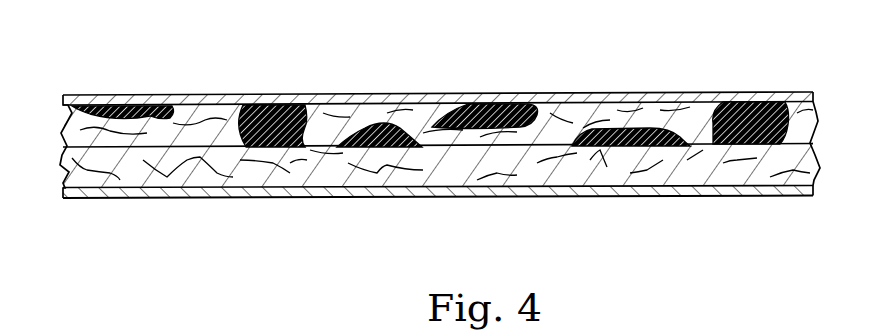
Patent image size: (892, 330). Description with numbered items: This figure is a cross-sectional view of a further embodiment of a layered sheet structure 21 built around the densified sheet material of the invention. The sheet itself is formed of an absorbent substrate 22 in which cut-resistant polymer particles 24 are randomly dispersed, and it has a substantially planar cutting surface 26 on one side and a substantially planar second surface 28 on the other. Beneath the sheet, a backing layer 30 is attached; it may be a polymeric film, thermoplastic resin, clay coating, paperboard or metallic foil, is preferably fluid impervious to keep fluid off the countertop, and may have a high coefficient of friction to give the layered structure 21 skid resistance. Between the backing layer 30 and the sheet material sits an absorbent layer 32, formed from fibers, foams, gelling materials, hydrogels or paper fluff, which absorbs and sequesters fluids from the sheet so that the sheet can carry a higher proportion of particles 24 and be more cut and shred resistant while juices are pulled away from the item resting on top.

The layered structure 21 is at (440, 143).
The absorbent substrate 22 is at (438, 89).
The cut-resistant particles 24 is at (88, 108).
The cutting surface 26 is at (438, 61).
The second surface 28 is at (313, 147).
The backing layer 30 is at (577, 192).
The absorbent layer 32 is at (717, 177).